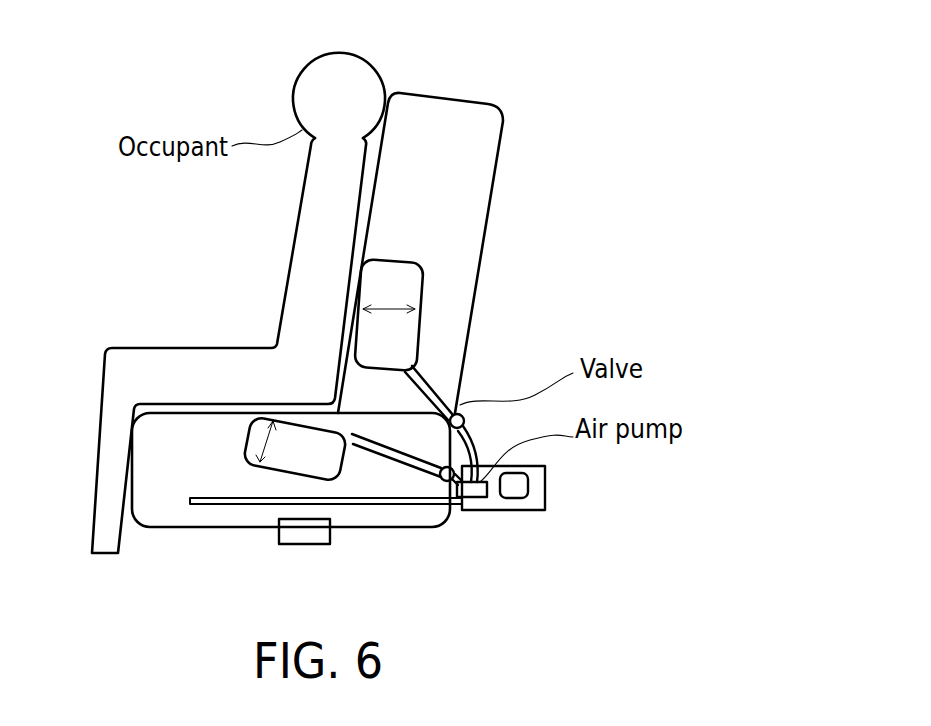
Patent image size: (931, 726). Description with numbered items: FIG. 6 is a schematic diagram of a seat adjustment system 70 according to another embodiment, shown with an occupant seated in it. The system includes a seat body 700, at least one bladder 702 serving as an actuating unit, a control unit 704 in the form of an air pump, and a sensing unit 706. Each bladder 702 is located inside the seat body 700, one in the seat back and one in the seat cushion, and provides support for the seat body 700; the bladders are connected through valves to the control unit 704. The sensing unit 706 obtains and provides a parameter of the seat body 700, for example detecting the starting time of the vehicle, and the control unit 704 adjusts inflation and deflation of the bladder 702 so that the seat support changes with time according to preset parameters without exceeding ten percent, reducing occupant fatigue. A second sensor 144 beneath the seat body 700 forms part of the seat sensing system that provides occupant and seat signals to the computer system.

The seat 70 is at (558, 82).
The seat body 700 is at (262, 530).
The bladder 702 is at (422, 282).
The control unit 704 is at (513, 498).
The sensing unit 706 is at (203, 507).
The second sensor 144 is at (317, 545).